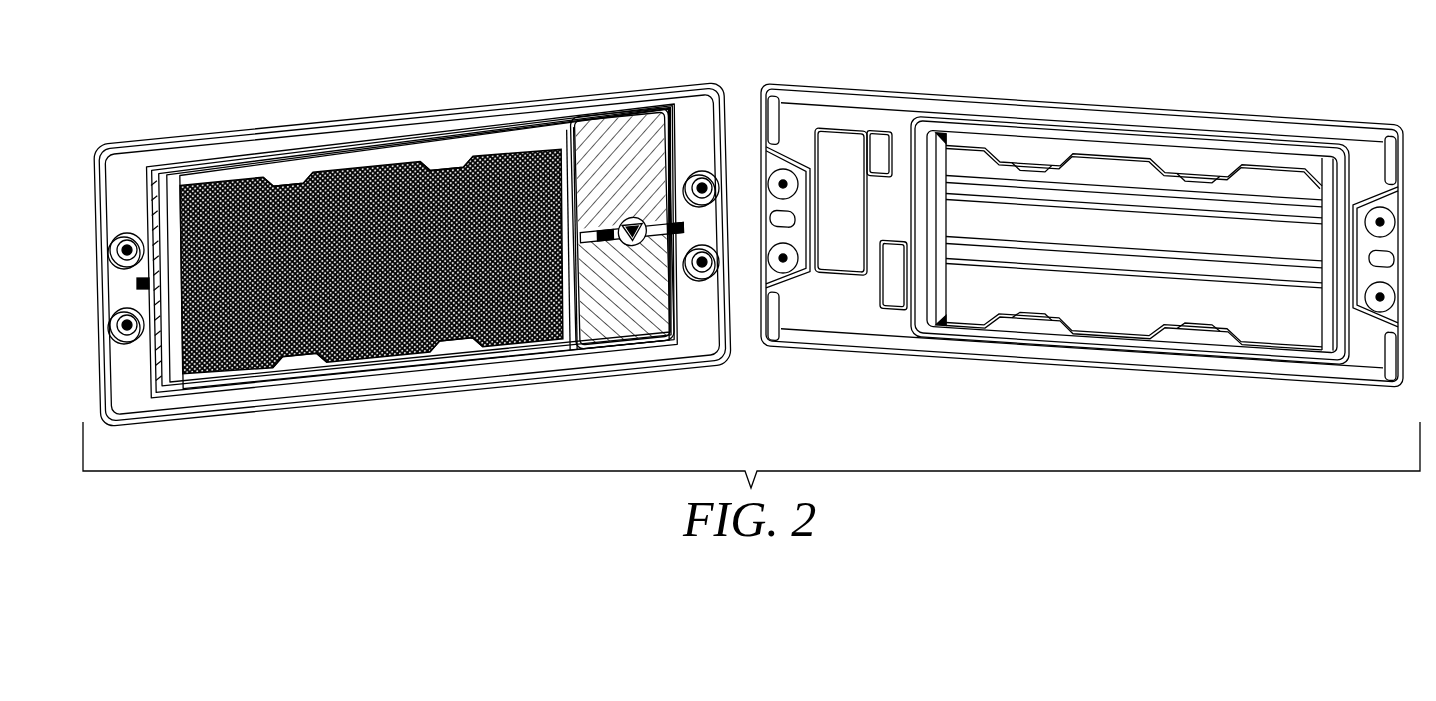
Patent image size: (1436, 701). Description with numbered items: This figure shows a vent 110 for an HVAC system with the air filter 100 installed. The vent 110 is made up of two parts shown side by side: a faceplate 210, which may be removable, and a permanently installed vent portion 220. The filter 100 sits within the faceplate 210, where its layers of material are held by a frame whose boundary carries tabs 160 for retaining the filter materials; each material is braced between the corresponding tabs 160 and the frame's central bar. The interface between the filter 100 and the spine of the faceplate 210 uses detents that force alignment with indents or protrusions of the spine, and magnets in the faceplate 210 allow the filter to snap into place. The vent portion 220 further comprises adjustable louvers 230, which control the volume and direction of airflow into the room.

The vent 110 is at (628, 50).
The faceplate 210 is at (238, 128).
The tabs 160 is at (300, 181).
The air filter 100 is at (469, 186).
The vent portion 220 is at (1228, 110).
The louvers 230 is at (1083, 227).